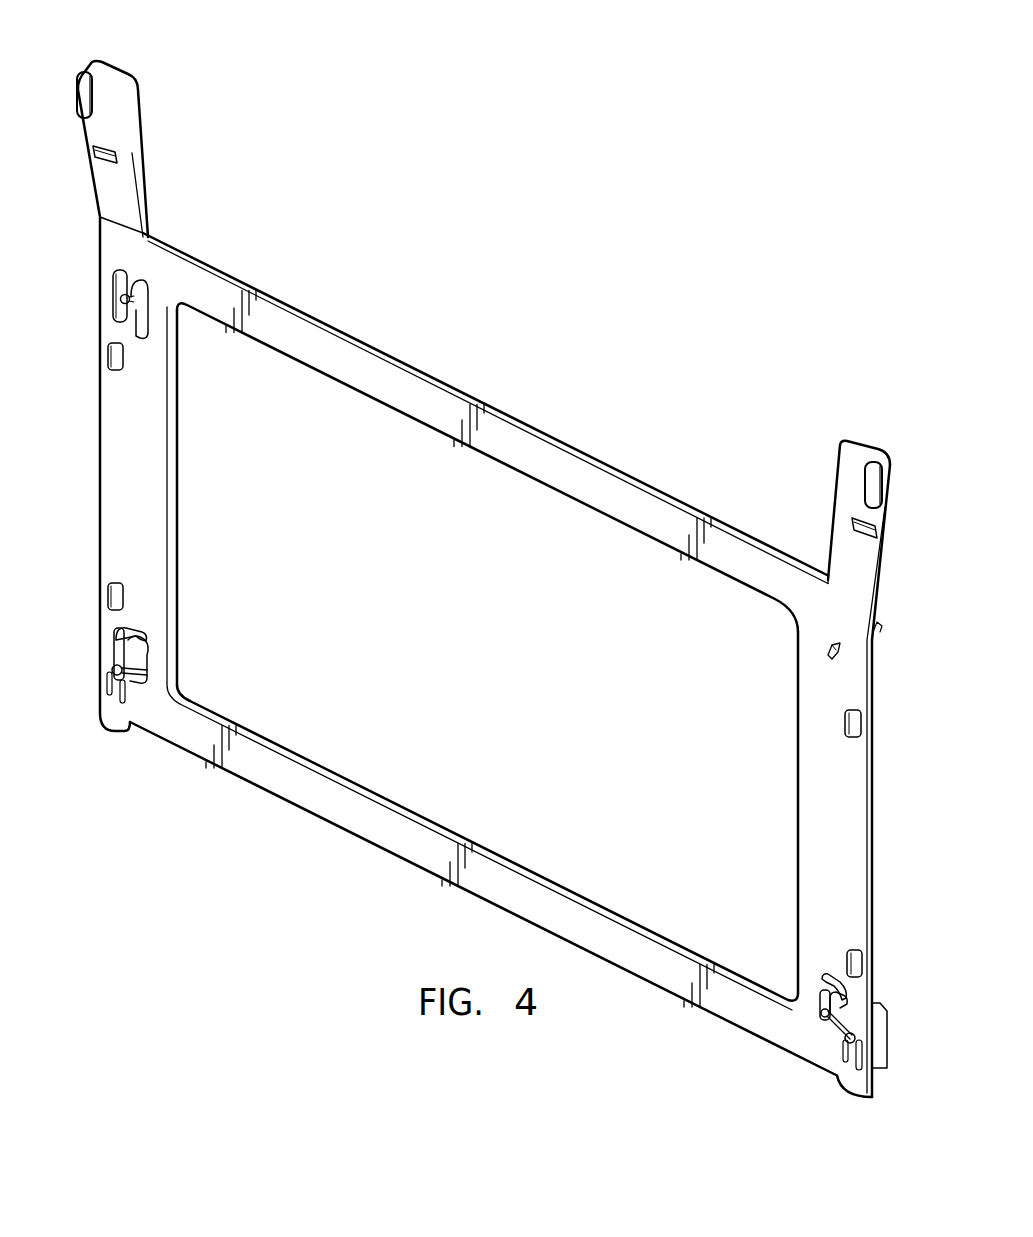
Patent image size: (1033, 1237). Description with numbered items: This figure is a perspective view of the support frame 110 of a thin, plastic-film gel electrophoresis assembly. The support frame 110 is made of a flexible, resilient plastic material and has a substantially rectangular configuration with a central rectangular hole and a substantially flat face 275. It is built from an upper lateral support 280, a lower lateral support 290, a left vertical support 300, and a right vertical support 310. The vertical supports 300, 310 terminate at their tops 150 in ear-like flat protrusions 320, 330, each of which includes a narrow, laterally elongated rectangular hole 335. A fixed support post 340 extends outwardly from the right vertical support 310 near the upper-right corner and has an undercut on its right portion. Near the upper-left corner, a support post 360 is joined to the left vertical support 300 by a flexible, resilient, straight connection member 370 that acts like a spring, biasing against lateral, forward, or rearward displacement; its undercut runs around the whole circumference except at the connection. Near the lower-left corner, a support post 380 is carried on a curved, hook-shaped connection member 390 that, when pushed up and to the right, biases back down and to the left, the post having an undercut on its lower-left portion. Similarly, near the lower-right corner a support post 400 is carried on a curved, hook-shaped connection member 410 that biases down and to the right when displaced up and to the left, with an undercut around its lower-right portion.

The support frame 110 is at (652, 322).
The tops 150 is at (120, 60).
The flat face 275 is at (418, 395).
The upper lateral support 280 is at (337, 327).
The lower lateral support 290 is at (343, 775).
The left vertical support 300 is at (182, 500).
The right vertical support 310 is at (798, 727).
The flat protrusion 320 is at (138, 125).
The flat protrusion 330 is at (838, 460).
The rectangular hole 335 is at (117, 160).
The fixed support post 340 is at (827, 650).
The support post 360 is at (122, 298).
The connection member 370 is at (132, 310).
The support post 380 is at (142, 673).
The connection member 390 is at (128, 635).
The support post 400 is at (827, 1013).
The connection member 410 is at (842, 980).